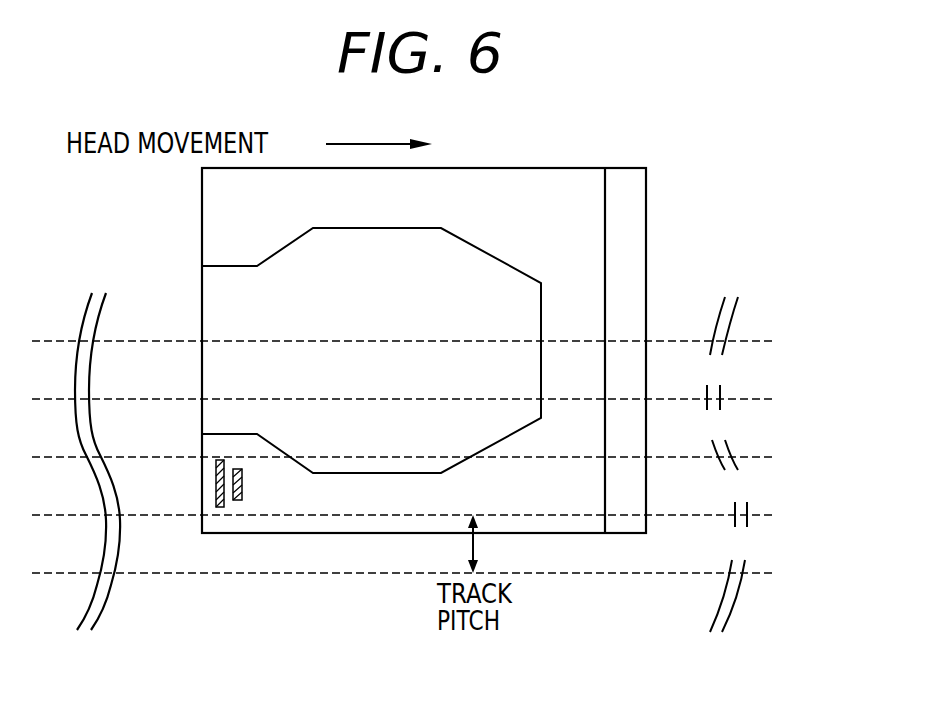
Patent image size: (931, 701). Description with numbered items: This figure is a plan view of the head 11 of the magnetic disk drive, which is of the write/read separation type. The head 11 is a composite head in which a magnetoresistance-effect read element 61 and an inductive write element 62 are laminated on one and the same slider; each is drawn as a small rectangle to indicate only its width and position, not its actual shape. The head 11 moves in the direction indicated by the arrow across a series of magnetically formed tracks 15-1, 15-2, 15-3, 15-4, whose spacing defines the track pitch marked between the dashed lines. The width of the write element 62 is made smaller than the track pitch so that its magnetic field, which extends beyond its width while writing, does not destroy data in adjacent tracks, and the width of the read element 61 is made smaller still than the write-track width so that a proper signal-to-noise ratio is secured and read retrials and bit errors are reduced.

The head 11 is at (630, 235).
The read element 61 is at (238, 500).
The write element 62 is at (220, 507).
The track 15-1 is at (416, 353).
The track 15-2 is at (416, 443).
The track 15-3 is at (416, 500).
The track 15-4 is at (416, 582).